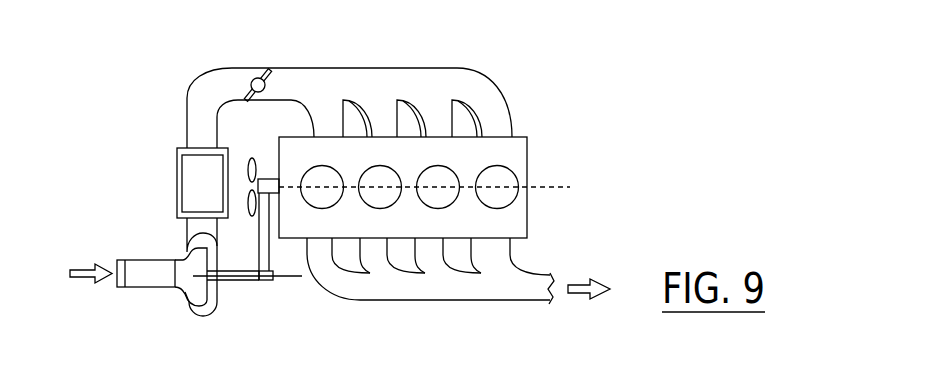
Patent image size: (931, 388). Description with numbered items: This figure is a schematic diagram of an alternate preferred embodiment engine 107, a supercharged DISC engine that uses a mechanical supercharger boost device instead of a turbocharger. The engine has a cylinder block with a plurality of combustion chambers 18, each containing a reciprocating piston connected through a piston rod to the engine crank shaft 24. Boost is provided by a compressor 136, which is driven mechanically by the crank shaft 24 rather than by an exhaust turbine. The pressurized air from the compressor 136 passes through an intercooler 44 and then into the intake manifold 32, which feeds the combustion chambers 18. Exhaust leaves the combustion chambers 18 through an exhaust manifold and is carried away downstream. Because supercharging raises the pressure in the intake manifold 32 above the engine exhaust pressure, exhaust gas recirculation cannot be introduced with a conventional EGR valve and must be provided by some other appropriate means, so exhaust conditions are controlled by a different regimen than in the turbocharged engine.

The combustion chamber 18 is at (512, 173).
The crank shaft 24 is at (273, 178).
The intake manifold 32 is at (417, 68).
The intercooler 44 is at (176, 183).
The engine 107 is at (412, 68).
The compressor 136 is at (184, 285).